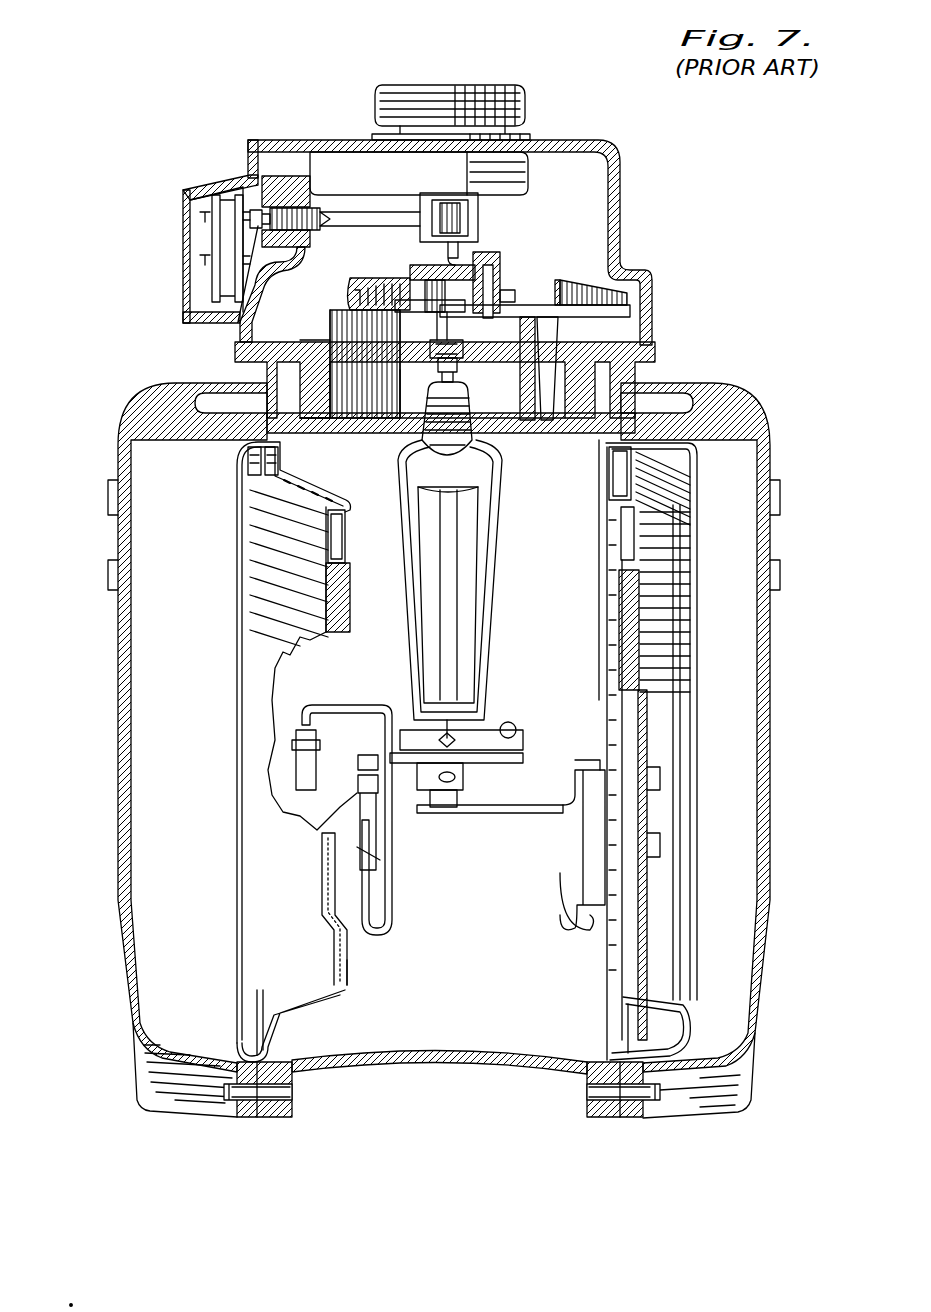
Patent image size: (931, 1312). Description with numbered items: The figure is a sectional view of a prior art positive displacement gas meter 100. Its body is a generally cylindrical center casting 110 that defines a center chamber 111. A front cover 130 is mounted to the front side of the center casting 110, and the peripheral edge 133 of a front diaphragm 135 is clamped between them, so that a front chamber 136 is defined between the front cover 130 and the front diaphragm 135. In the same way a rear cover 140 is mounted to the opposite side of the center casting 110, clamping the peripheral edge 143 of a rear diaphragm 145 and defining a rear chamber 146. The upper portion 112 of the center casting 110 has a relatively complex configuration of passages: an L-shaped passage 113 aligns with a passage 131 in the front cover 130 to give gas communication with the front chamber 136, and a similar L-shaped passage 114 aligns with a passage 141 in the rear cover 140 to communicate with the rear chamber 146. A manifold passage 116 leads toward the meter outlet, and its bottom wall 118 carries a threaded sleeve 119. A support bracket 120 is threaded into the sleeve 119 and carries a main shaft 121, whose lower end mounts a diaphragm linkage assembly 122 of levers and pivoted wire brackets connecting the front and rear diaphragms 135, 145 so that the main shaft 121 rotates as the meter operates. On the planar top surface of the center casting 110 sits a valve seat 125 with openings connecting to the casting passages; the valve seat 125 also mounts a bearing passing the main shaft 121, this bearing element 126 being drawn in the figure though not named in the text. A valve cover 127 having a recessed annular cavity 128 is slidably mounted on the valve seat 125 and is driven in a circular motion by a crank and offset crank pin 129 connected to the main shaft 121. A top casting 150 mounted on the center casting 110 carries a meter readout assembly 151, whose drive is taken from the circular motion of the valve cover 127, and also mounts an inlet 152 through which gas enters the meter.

The positive displacement gas meter 100 is at (110, 1027).
The center casting 110 is at (398, 1066).
The center chamber 111 is at (500, 980).
The upper portion of the center casting 112 is at (388, 440).
The L-shaped passage 113 is at (292, 348).
The L-shaped passage 114 is at (548, 402).
The manifold passage 116 is at (400, 410).
The bottom wall of the manifold passage 118 is at (513, 420).
The threaded sleeve 119 is at (463, 398).
The support bracket 120 is at (488, 550).
The main shaft 121 is at (470, 636).
The diaphragm linkage assembly 122 is at (404, 792).
The valve seat 125 is at (530, 300).
The terminal block 126 is at (463, 352).
The valve cover 127 is at (500, 262).
The recessed annular cavity 128 is at (437, 280).
The crank and offset crank pin 129 is at (488, 300).
The front cover 130 is at (118, 944).
The passage 131 is at (222, 385).
The peripheral edge of the front diaphragm 133 is at (268, 1117).
The front diaphragm 135 is at (298, 1003).
The front chamber 136 is at (205, 702).
The rear cover 140 is at (770, 982).
The passage 141 is at (690, 392).
The peripheral edge of the rear diaphragm 143 is at (620, 1117).
The rear diaphragm 145 is at (648, 1000).
The rear chamber 146 is at (752, 733).
The top casting 150 is at (572, 140).
The meter readout assembly 151 is at (205, 236).
The inlet 152 is at (515, 82).